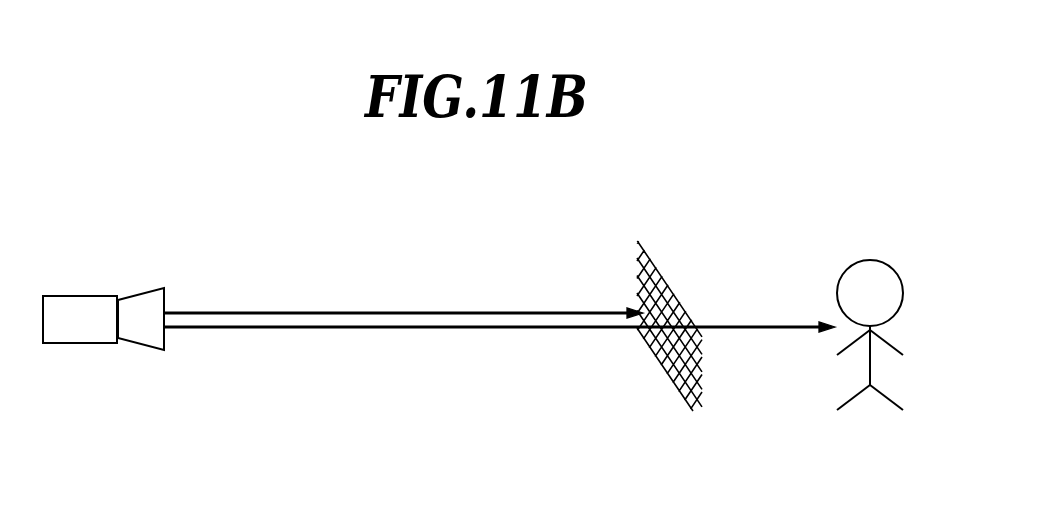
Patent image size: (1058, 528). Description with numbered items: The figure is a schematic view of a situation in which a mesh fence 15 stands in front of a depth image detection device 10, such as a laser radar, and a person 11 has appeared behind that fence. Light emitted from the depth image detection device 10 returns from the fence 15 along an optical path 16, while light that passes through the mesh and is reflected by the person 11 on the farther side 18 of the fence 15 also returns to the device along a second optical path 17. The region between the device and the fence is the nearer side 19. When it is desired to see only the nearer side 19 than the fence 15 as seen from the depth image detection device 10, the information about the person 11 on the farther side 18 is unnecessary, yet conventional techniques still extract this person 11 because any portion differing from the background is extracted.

The depth image detection device 10 is at (82, 295).
The person 11 is at (877, 272).
The mesh fence 15 is at (647, 256).
The optical path 16 is at (348, 311).
The optical path 17 is at (422, 330).
The farther side 18 is at (767, 260).
The nearer side 19 is at (502, 257).